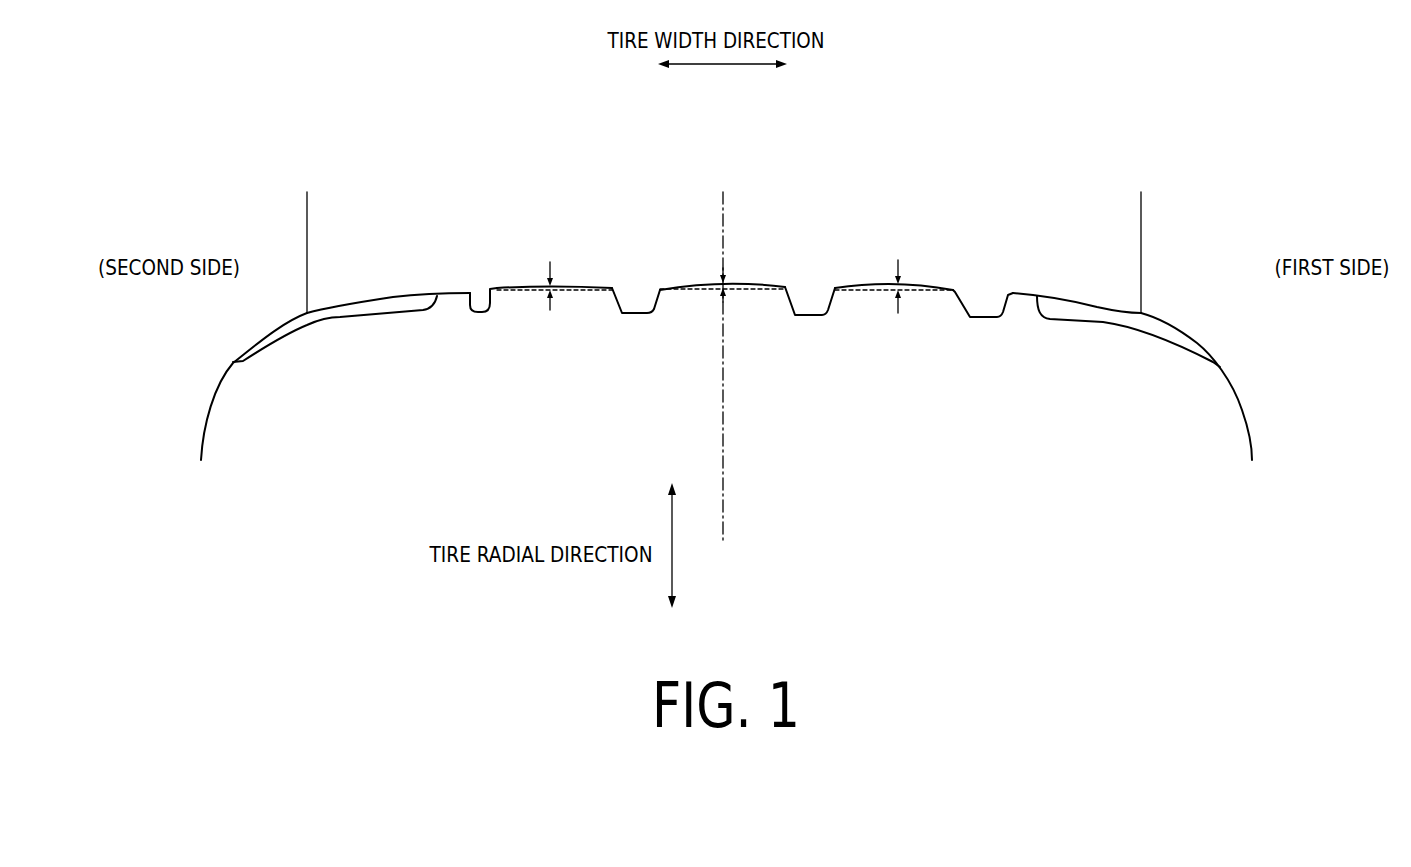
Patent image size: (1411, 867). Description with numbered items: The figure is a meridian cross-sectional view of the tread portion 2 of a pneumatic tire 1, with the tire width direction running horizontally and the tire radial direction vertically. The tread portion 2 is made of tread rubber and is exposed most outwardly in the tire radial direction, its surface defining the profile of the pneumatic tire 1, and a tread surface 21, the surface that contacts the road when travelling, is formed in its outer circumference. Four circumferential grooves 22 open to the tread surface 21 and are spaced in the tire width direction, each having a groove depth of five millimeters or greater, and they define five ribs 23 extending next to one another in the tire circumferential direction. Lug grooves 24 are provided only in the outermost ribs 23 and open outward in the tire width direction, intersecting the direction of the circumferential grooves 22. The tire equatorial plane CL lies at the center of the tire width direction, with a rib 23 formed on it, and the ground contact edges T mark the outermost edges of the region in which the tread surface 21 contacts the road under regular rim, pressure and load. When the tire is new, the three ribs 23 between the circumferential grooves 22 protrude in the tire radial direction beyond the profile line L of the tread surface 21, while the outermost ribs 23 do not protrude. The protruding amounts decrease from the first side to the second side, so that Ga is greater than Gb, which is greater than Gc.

The pneumatic tire 1 is at (980, 143).
The tread portion 2 is at (847, 312).
The tread surface 21 is at (724, 268).
The circumferential groove 22 is at (485, 300).
The rib 23 is at (388, 297).
The lug groove 24 is at (340, 318).
The ground contact edge T is at (723, 238).
The tire equatorial plane CL is at (723, 352).
The profile line L is at (565, 292).
The protruding amount of first-side rib Ga is at (887, 291).
The protruding amount of center rib Gb is at (707, 289).
The protruding amount of second-side rib Gc is at (537, 291).